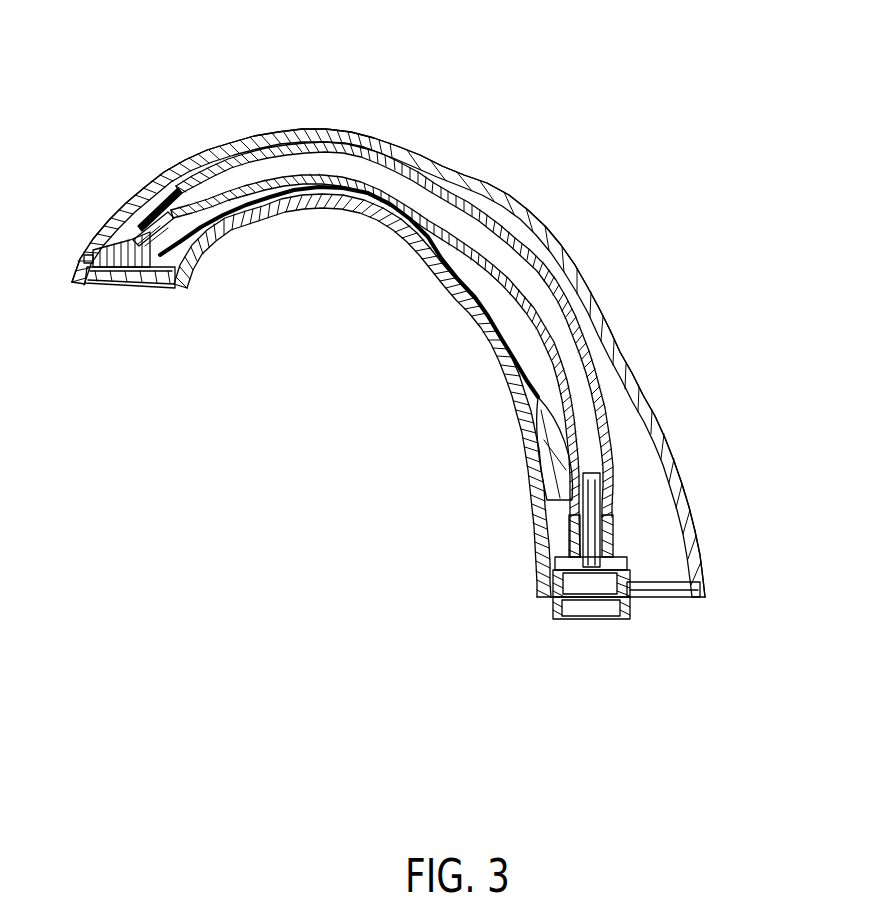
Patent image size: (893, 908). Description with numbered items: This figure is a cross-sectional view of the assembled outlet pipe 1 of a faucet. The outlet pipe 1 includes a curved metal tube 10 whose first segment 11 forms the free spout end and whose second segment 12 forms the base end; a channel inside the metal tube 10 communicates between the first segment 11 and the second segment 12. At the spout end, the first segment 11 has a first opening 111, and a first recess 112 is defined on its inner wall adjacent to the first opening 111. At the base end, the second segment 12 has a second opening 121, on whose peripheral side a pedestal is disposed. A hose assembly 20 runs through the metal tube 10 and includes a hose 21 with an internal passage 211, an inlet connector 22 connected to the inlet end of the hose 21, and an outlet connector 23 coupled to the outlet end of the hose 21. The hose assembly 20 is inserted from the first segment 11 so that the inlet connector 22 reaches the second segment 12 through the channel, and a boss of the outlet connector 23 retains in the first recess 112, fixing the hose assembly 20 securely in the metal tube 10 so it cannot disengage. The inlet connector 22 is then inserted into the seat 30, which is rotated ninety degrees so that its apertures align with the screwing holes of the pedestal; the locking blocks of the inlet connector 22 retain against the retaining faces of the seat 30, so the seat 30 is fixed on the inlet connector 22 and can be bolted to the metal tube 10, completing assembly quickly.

The outlet pipe 1 is at (477, 88).
The metal tube 10 is at (497, 184).
The first segment 11 is at (167, 290).
The first opening 111 is at (140, 277).
The first recess 112 is at (90, 257).
The second segment 12 is at (686, 597).
The second opening 121 is at (650, 592).
The hose assembly 20 is at (617, 407).
The hose 21 is at (573, 325).
The passage 211 is at (503, 260).
The inlet connector 22 is at (600, 502).
The outlet connector 23 is at (125, 247).
The seat 30 is at (552, 617).